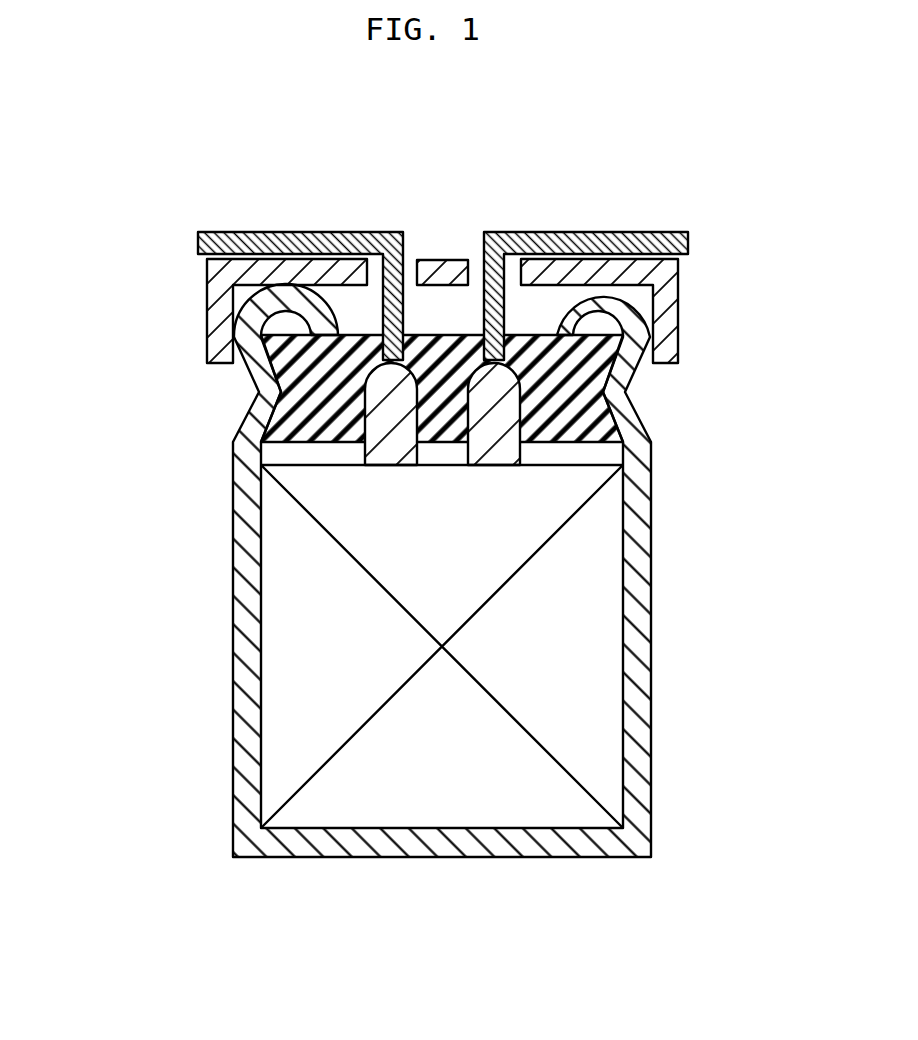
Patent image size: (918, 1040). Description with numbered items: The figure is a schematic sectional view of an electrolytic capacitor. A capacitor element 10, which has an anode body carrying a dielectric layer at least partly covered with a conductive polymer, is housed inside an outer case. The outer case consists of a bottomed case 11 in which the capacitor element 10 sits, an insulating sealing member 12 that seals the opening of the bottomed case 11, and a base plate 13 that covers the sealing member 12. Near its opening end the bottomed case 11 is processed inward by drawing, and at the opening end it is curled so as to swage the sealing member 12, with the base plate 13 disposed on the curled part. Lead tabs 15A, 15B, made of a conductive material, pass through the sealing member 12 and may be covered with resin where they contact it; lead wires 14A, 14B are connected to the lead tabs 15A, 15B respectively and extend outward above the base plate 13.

The capacitor element 10 is at (312, 619).
The bottomed case 11 is at (640, 578).
The sealing member 12 is at (565, 396).
The base plate 13 is at (217, 292).
The lead wire 14A is at (297, 232).
The lead wire 14B is at (598, 232).
The lead tab 15A is at (390, 402).
The lead tab 15B is at (493, 428).